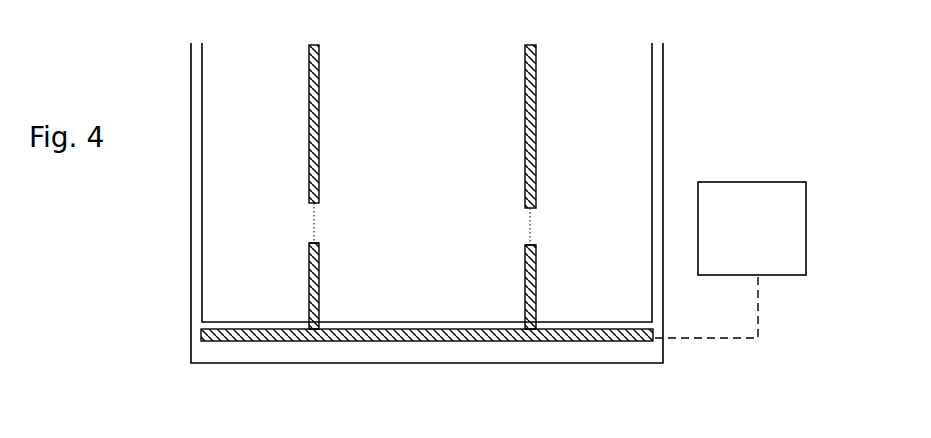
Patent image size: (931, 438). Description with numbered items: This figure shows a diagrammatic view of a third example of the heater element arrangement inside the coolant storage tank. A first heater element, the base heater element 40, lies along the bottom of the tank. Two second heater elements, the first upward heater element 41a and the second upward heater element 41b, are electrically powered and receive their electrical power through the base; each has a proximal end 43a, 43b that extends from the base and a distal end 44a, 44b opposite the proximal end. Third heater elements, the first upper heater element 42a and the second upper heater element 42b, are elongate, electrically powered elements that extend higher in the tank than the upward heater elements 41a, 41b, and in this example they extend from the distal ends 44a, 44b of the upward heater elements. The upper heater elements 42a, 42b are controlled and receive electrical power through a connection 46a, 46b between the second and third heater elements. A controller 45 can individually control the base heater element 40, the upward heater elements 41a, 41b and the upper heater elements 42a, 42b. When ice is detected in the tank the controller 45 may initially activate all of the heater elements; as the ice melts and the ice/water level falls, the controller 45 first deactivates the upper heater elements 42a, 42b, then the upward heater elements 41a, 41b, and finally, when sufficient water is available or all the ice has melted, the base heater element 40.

The base heater element 40 is at (222, 336).
The first upward heater element 41a is at (309, 278).
The second upward heater element 41b is at (524, 283).
The first upper heater element 42a is at (318, 130).
The second upper heater element 42b is at (530, 136).
The proximal end 43a is at (320, 308).
The proximal end 43b is at (536, 313).
The distal end 44a is at (320, 254).
The distal end 44b is at (534, 263).
The controller 45 is at (767, 244).
The connection 46a is at (312, 219).
The connection 46b is at (525, 223).